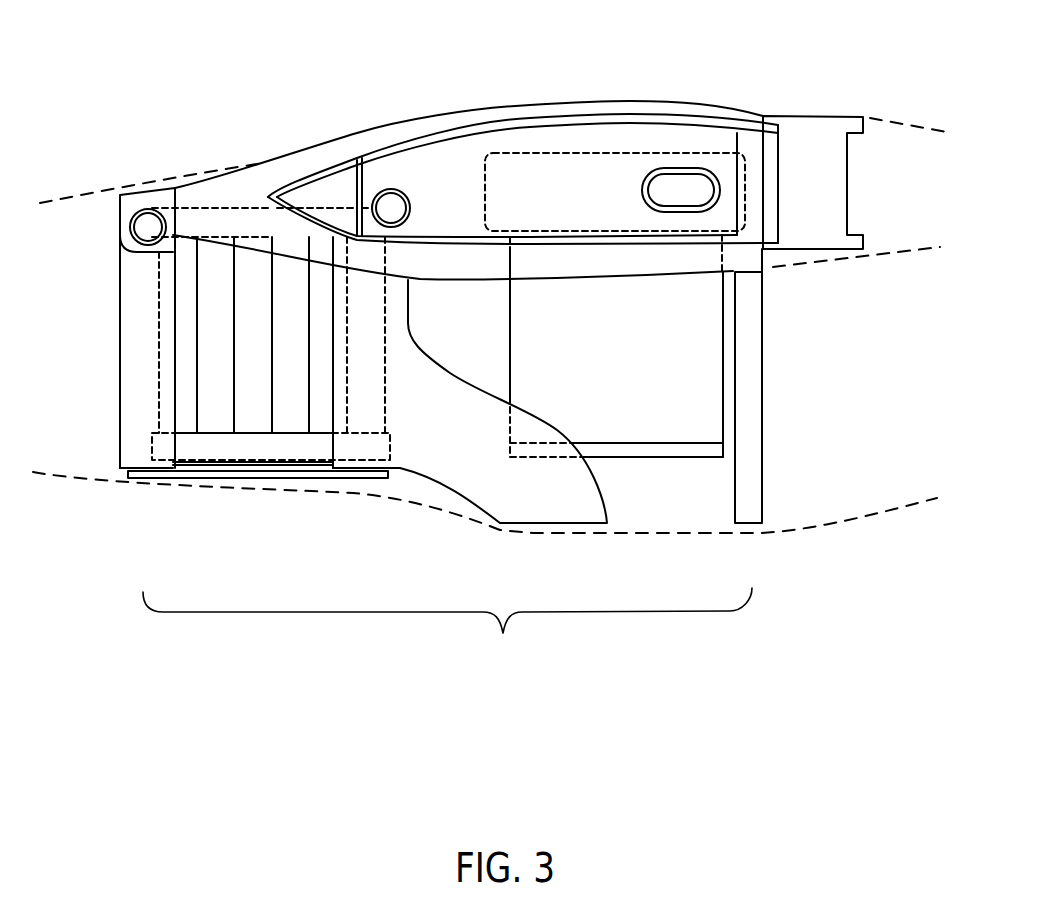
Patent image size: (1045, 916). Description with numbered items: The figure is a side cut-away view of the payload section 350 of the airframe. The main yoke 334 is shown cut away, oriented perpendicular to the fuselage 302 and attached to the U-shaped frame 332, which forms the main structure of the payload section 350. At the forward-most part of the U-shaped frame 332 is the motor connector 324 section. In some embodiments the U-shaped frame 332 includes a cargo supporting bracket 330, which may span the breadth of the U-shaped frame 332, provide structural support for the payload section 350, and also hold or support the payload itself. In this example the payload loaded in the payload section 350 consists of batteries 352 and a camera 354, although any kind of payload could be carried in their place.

The fuselage 302 is at (838, 485).
The motor connector 324 is at (133, 295).
The cargo supporting bracket 330 is at (523, 483).
The U-shaped frame 332 is at (440, 162).
The main yoke 334 is at (807, 140).
The payload section 350 is at (447, 631).
The batteries 352 is at (442, 351).
The camera 354 is at (616, 346).